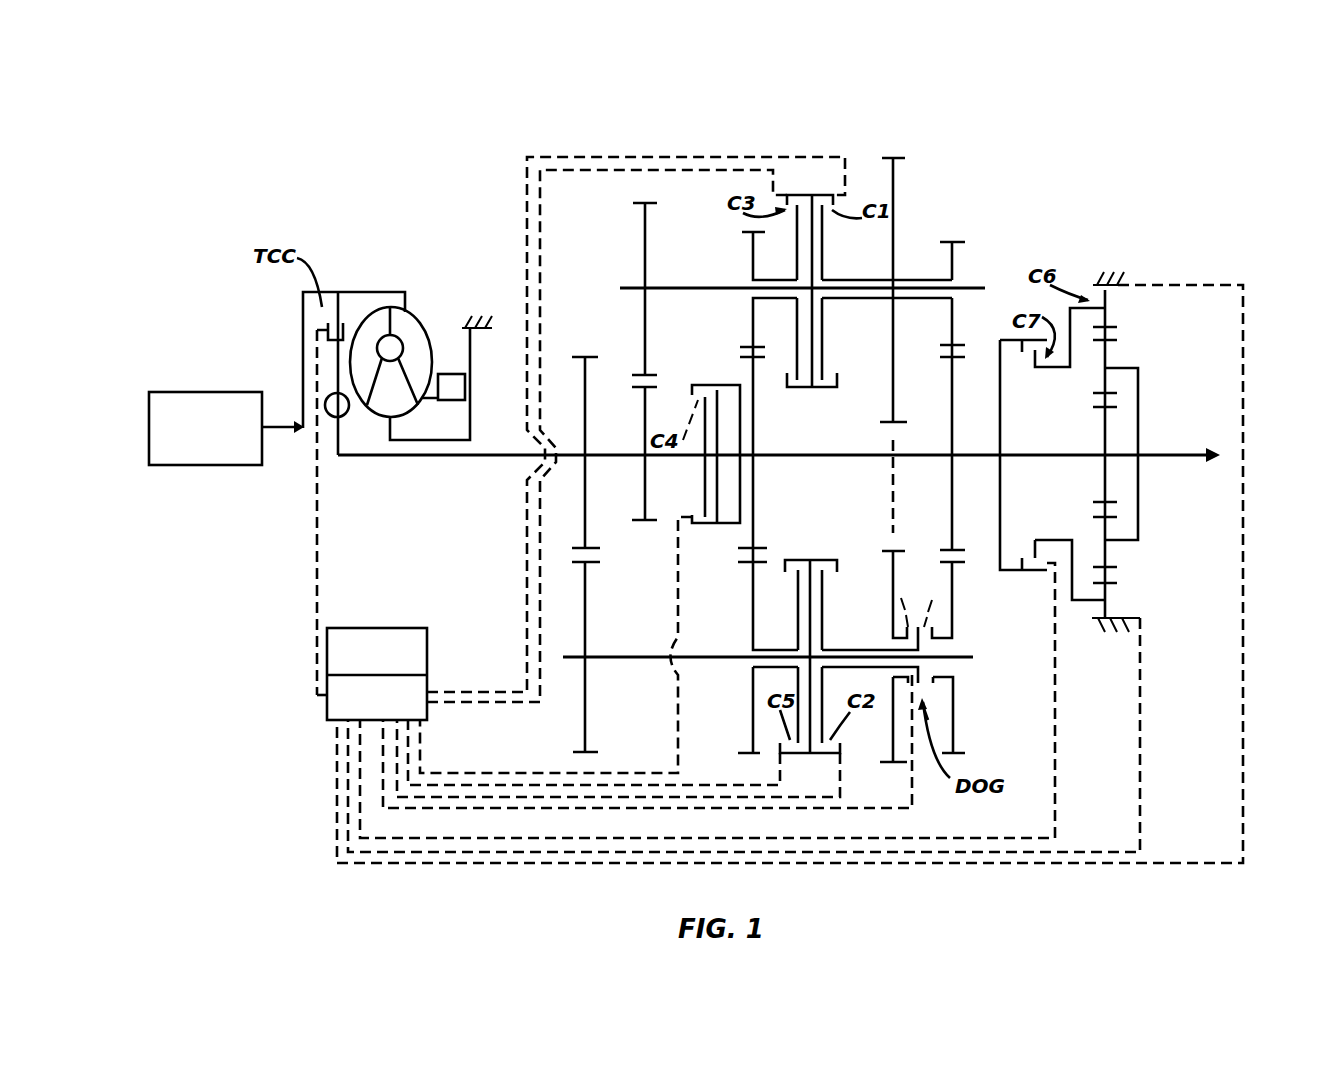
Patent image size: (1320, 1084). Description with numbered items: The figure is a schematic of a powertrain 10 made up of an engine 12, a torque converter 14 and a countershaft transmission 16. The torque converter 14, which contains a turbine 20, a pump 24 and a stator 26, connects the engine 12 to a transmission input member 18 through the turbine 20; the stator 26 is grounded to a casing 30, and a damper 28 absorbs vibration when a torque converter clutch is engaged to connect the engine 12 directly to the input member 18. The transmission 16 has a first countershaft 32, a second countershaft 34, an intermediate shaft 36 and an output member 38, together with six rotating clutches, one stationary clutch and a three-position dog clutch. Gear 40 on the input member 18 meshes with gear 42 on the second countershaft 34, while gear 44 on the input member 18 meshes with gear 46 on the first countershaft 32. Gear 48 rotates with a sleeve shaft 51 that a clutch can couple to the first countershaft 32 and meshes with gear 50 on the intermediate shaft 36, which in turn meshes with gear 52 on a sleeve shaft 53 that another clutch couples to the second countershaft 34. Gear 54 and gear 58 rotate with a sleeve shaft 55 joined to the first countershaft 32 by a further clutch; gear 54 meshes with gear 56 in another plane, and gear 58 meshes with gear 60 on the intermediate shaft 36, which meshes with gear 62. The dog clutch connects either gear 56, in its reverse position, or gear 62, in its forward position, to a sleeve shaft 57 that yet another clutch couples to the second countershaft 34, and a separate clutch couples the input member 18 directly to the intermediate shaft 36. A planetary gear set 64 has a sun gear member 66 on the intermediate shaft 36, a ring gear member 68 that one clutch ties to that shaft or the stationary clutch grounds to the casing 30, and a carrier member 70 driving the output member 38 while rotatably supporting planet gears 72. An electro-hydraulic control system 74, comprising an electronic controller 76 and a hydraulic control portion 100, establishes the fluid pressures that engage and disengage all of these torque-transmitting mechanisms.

The powertrain 10 is at (509, 144).
The engine 12 is at (237, 463).
The torque converter 14 is at (424, 293).
The countershaft transmission 16 is at (951, 160).
The transmission input member 18 is at (450, 457).
The turbine 20 is at (370, 313).
The pump 24 is at (428, 330).
The stator 26 is at (388, 417).
The damper 28 is at (330, 413).
The casing 30 is at (480, 332).
The first countershaft 32 is at (668, 287).
The second countershaft 34 is at (633, 657).
The intermediate shaft 36 is at (805, 457).
The output member 38 is at (1183, 457).
The gear 40 is at (583, 498).
The gear 42 is at (583, 578).
The gear 44 is at (643, 427).
The gear 46 is at (643, 247).
The gear 48 is at (753, 273).
The gear 50 is at (755, 387).
The sleeve shaft 51 is at (772, 273).
The gear 52 is at (753, 612).
The sleeve shaft 53 is at (763, 643).
The gear 54 is at (895, 227).
The sleeve shaft 55 is at (840, 273).
The gear 56 is at (893, 598).
The sleeve shaft 57 is at (883, 647).
The gear 58 is at (953, 260).
The gear 60 is at (952, 388).
The gear 62 is at (955, 572).
The planetary gear set 64 is at (1138, 350).
The sun gear member 66 is at (1103, 417).
The ring gear member 68 is at (1113, 580).
The carrier member 70 is at (1140, 410).
The planet gears 72 is at (1103, 352).
The electro-hydraulic control system 74 is at (440, 643).
The electronic controller 76 is at (340, 628).
The hydraulic control portion 100 is at (428, 708).